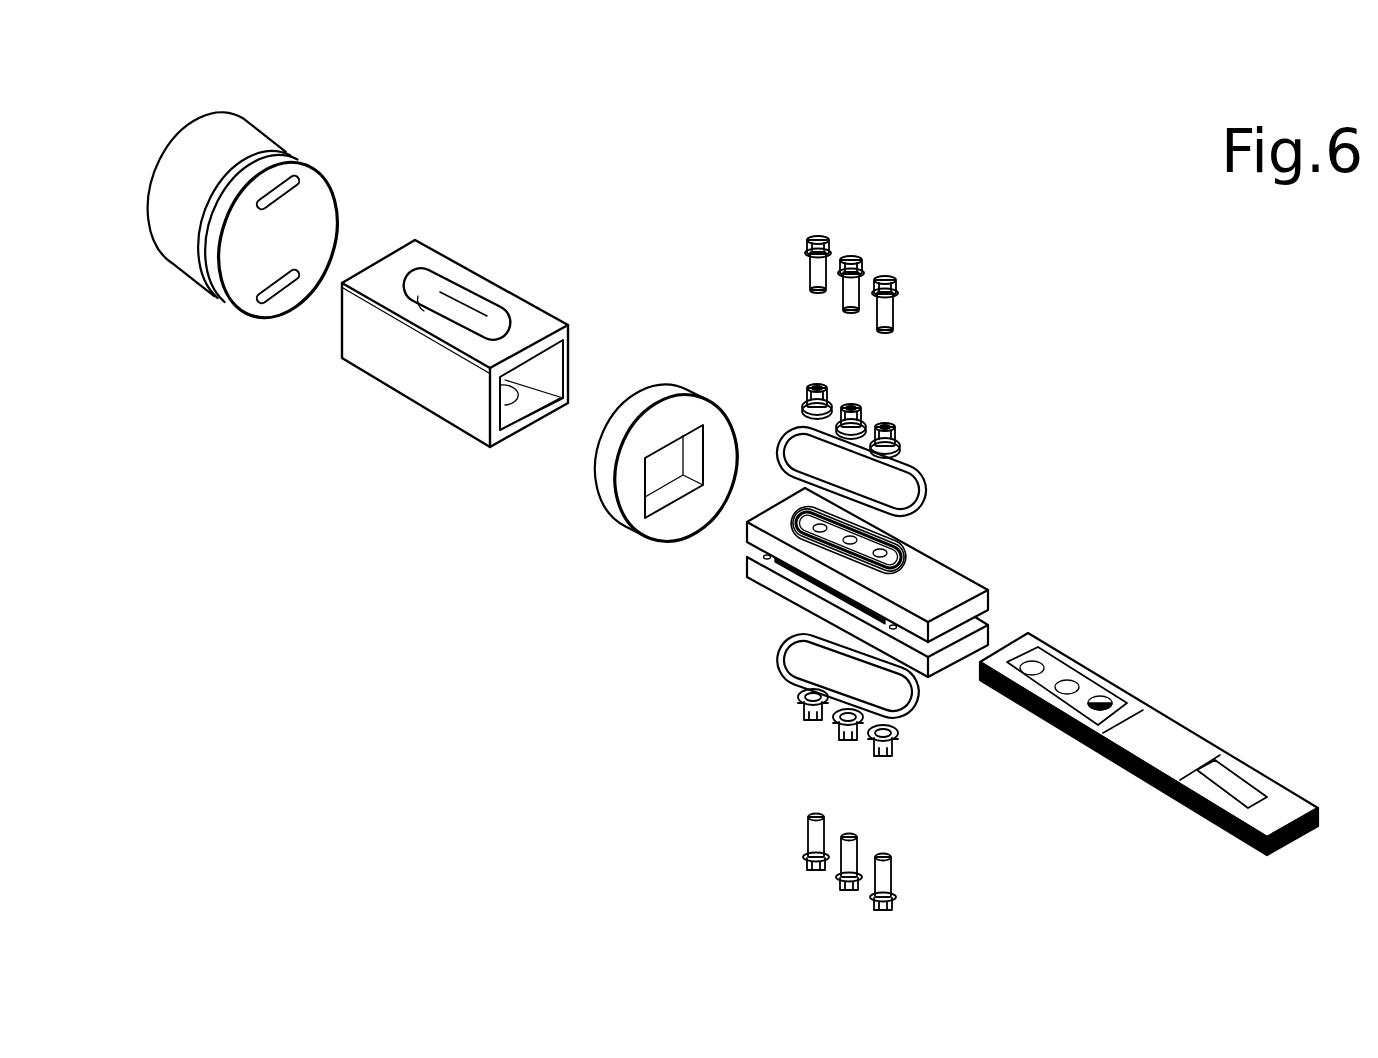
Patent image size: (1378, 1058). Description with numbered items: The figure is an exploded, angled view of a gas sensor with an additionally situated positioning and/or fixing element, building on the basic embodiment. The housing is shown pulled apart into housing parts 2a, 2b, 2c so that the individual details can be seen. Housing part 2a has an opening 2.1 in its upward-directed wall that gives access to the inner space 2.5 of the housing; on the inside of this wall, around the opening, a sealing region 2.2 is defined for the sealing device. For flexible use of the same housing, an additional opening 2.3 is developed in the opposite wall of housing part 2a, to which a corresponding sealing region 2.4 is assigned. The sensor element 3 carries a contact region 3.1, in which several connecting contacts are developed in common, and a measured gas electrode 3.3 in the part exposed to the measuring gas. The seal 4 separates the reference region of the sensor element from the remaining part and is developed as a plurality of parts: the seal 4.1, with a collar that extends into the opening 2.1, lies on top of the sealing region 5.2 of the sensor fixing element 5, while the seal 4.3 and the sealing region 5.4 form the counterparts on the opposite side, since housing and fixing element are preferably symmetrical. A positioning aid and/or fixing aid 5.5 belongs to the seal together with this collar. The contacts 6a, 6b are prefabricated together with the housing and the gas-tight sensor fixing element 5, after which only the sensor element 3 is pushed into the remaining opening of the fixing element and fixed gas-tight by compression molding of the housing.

The housing part 2a is at (478, 277).
The housing part 2b is at (273, 190).
The housing part 2c is at (619, 476).
The opening 2.1 is at (547, 241).
The sealing region 2.2 is at (421, 258).
The opening 2.3 is at (617, 340).
The sealing region 2.4 is at (631, 375).
The inner space 2.5 is at (596, 331).
The sensor element 3 is at (1149, 739).
The contact region 3.1 is at (1093, 617).
The measured gas electrode 3.3 is at (1270, 734).
The seal 4 is at (1086, 619).
The seal 4.1 is at (905, 449).
The seal 4.3 is at (767, 692).
The sensor fixing element 5 is at (902, 657).
The sealing region 5.2 is at (915, 521).
The sealing region 5.4 is at (830, 616).
The positioning aid and/or fixing aid 5.5 is at (912, 501).
The contacts 6a is at (898, 387).
The contacts 6b is at (900, 281).